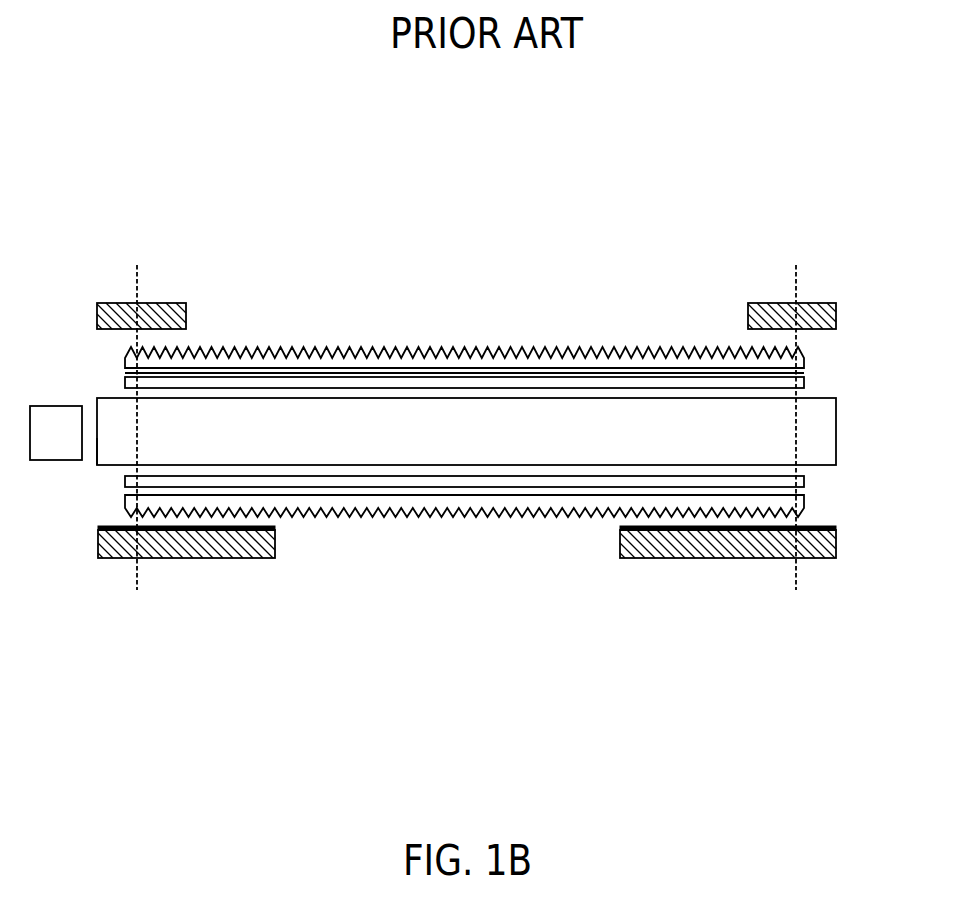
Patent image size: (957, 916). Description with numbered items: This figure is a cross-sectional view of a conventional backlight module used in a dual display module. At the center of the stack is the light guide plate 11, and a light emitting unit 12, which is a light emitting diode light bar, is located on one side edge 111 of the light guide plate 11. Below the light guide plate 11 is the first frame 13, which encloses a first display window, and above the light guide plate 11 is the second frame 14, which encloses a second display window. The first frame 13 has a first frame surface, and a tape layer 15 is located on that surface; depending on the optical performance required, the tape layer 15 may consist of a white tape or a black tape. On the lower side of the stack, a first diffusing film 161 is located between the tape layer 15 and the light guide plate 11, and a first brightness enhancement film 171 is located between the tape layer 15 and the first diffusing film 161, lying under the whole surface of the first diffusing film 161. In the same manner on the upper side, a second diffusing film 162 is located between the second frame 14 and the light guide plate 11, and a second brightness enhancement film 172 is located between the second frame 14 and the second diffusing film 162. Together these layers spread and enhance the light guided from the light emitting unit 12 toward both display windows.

The light guide plate 11 is at (836, 432).
The side edge 111 is at (97, 438).
The light emitting unit 12 is at (48, 405).
The first frame 13 is at (815, 558).
The second frame 14 is at (836, 315).
The tape layer 15 is at (836, 528).
The first diffusing film 161 is at (805, 483).
The second diffusing film 162 is at (805, 380).
The first brightness enhancement film 171 is at (805, 500).
The second brightness enhancement film 172 is at (805, 360).